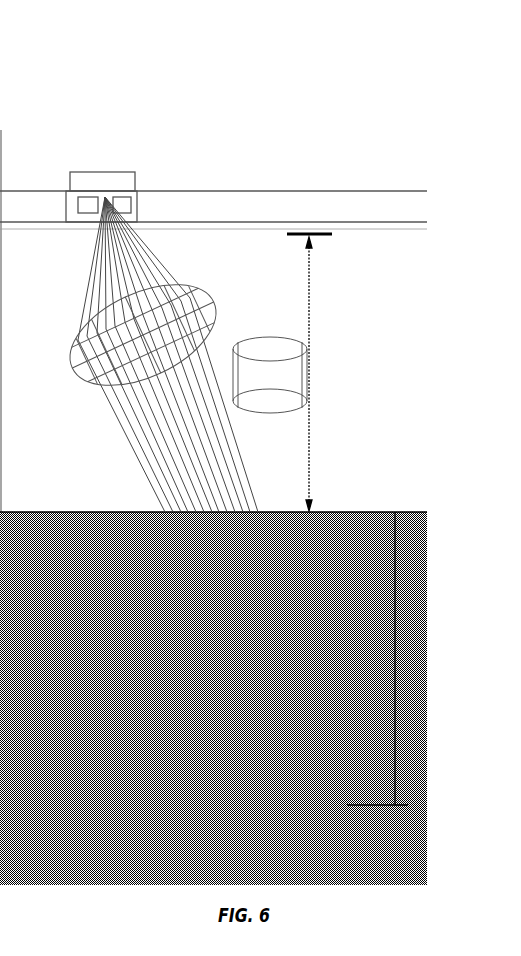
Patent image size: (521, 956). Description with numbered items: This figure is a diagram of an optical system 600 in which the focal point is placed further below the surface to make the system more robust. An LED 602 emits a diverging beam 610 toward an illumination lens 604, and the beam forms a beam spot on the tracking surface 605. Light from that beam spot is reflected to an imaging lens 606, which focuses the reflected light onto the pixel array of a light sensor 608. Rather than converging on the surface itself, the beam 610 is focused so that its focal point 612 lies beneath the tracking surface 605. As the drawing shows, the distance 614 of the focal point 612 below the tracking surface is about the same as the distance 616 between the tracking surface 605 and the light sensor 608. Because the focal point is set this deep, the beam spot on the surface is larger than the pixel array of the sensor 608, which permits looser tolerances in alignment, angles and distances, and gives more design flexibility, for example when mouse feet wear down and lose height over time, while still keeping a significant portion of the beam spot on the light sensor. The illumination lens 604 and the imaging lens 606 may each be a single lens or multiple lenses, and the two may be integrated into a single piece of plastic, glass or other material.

The optical tracking system 600 is at (257, 157).
The LED 602 is at (106, 185).
The illumination lens 604 is at (88, 370).
The tracking surface 605 is at (162, 517).
The imaging lens 606 is at (263, 360).
The light sensor 608 is at (313, 225).
The beam 610 is at (120, 428).
The focal point 612 is at (347, 805).
The distance 614 is at (397, 625).
The distance 616 is at (310, 307).